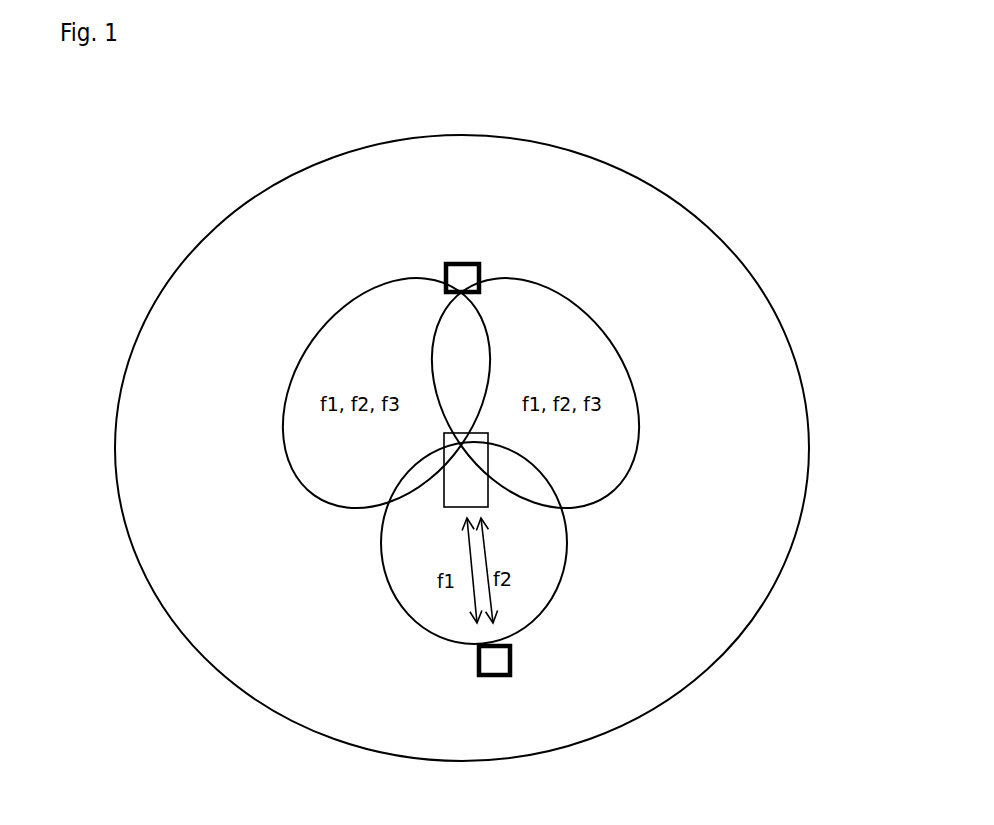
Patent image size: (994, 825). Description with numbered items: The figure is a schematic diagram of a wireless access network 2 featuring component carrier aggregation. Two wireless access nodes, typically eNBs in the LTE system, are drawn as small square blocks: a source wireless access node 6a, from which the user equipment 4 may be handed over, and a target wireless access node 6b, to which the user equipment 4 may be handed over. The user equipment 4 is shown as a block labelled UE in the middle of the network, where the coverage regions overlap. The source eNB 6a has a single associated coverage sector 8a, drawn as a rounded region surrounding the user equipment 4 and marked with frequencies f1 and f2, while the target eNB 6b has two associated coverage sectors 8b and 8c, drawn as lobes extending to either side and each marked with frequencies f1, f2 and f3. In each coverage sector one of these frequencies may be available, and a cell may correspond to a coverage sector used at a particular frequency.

The wireless access network 2 is at (252, 195).
The user equipment 4 is at (441, 508).
The source wireless access node 6a is at (478, 676).
The target wireless access node 6b is at (445, 265).
The coverage sector 8a is at (383, 576).
The coverage sector 8b is at (597, 323).
The coverage sector 8c is at (326, 322).